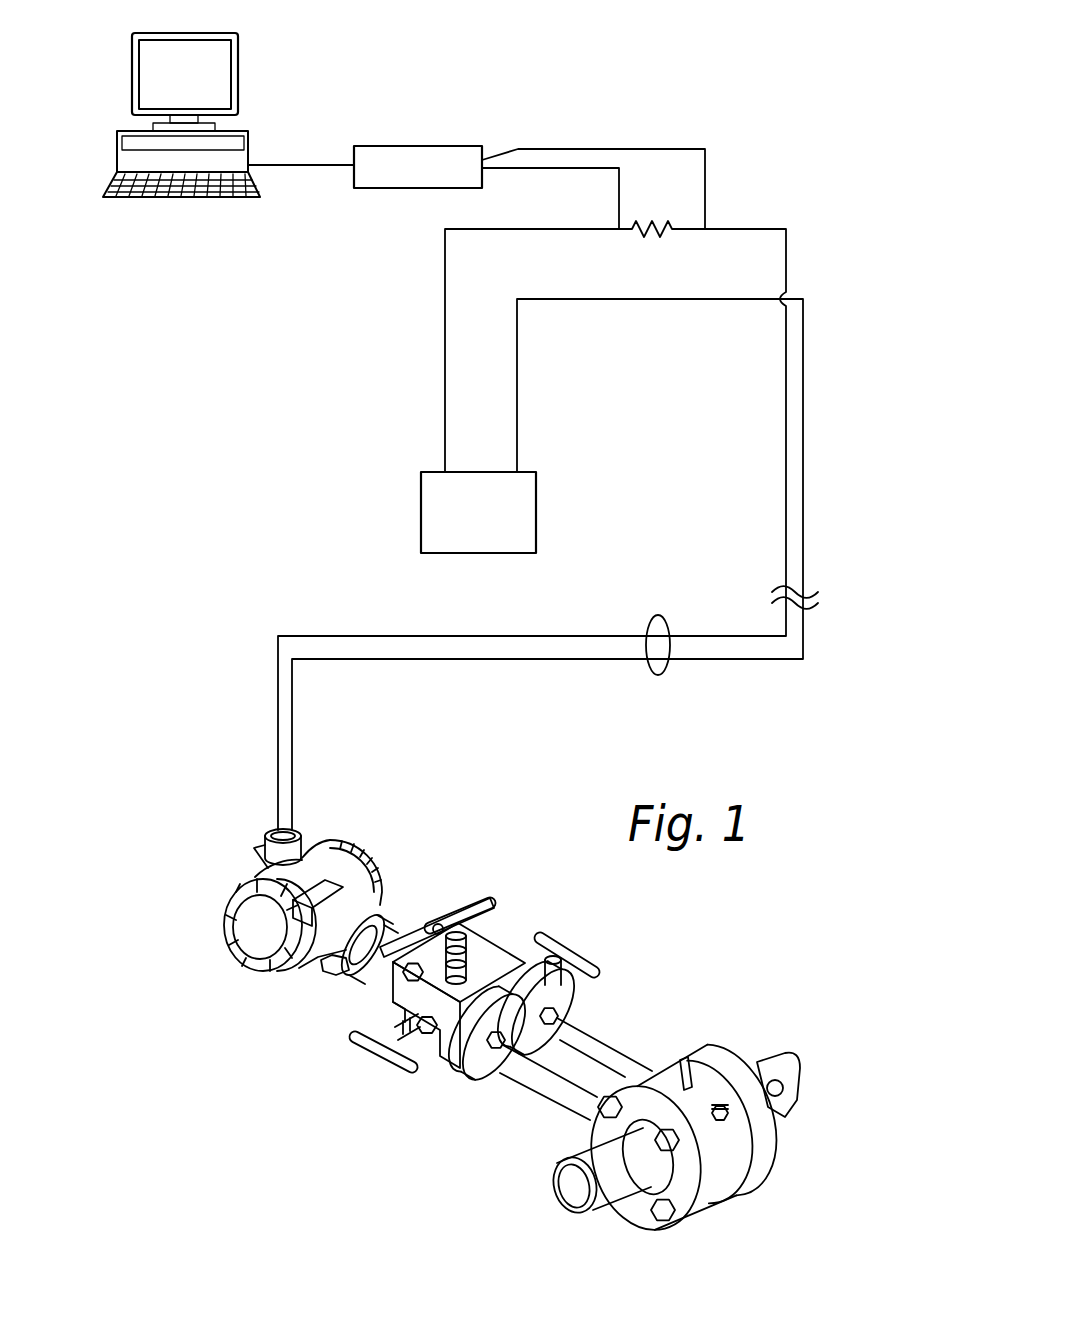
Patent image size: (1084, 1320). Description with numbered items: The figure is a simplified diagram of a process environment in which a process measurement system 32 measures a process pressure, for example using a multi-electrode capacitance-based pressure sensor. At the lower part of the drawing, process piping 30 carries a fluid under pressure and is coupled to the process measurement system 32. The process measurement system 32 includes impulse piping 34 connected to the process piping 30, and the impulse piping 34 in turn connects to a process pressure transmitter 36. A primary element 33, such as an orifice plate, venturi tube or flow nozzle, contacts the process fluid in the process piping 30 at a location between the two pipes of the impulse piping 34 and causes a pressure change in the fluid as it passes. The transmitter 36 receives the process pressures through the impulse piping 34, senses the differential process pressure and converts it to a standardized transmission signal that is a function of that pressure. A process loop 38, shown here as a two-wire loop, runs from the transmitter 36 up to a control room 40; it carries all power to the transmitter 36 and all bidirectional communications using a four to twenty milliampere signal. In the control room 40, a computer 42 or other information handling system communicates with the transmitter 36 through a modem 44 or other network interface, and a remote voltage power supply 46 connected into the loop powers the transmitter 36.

The process piping 30 is at (788, 1113).
The process measurement system 32 is at (645, 952).
The primary element 33 is at (743, 1192).
The impulse piping 34 is at (610, 1060).
The process pressure transmitter 36 is at (371, 838).
The process loop 38 is at (655, 674).
The control room 40 is at (348, 370).
The computer 42 is at (248, 139).
The modem 44 is at (419, 146).
The remote voltage power supply 46 is at (452, 553).